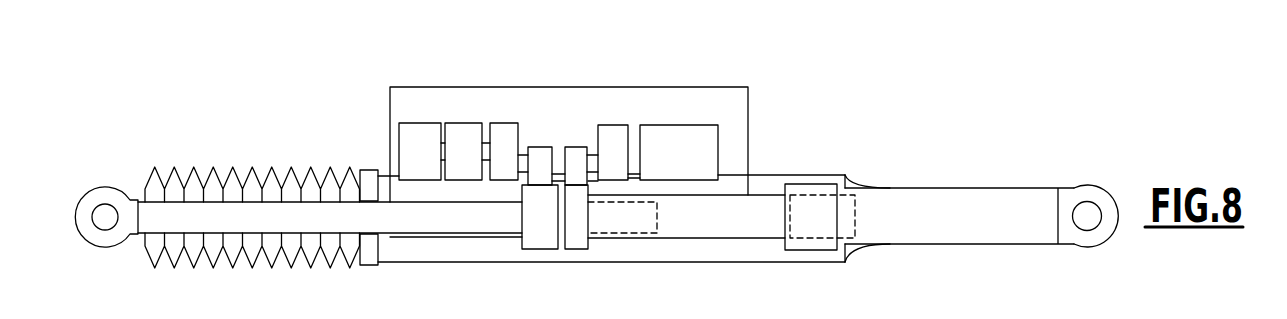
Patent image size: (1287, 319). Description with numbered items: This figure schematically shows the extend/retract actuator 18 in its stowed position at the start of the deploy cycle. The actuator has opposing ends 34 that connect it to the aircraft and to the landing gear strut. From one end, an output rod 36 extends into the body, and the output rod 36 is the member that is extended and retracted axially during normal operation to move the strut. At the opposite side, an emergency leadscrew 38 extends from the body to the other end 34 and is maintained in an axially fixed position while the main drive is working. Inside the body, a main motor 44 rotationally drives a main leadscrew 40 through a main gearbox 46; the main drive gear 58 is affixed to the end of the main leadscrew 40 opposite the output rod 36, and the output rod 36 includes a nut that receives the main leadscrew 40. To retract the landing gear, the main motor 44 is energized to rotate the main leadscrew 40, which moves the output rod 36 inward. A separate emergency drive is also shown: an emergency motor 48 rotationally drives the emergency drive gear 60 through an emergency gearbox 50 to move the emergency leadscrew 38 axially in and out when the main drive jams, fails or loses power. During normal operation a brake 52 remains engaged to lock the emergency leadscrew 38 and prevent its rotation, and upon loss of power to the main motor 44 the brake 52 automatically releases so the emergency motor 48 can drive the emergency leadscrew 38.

The extend/retract actuator 18 is at (824, 136).
The opposing ends 34 is at (93, 203).
The output rod 36 is at (947, 200).
The emergency leadscrew 38 is at (211, 210).
The main leadscrew 40 is at (816, 195).
The main motor 44 is at (685, 125).
The main gearbox 46 is at (612, 124).
The emergency motor 48 is at (415, 123).
The emergency gearbox 50 is at (508, 123).
The brake 52 is at (468, 123).
The main drive gear 58 is at (572, 243).
The emergency drive gear 60 is at (536, 243).